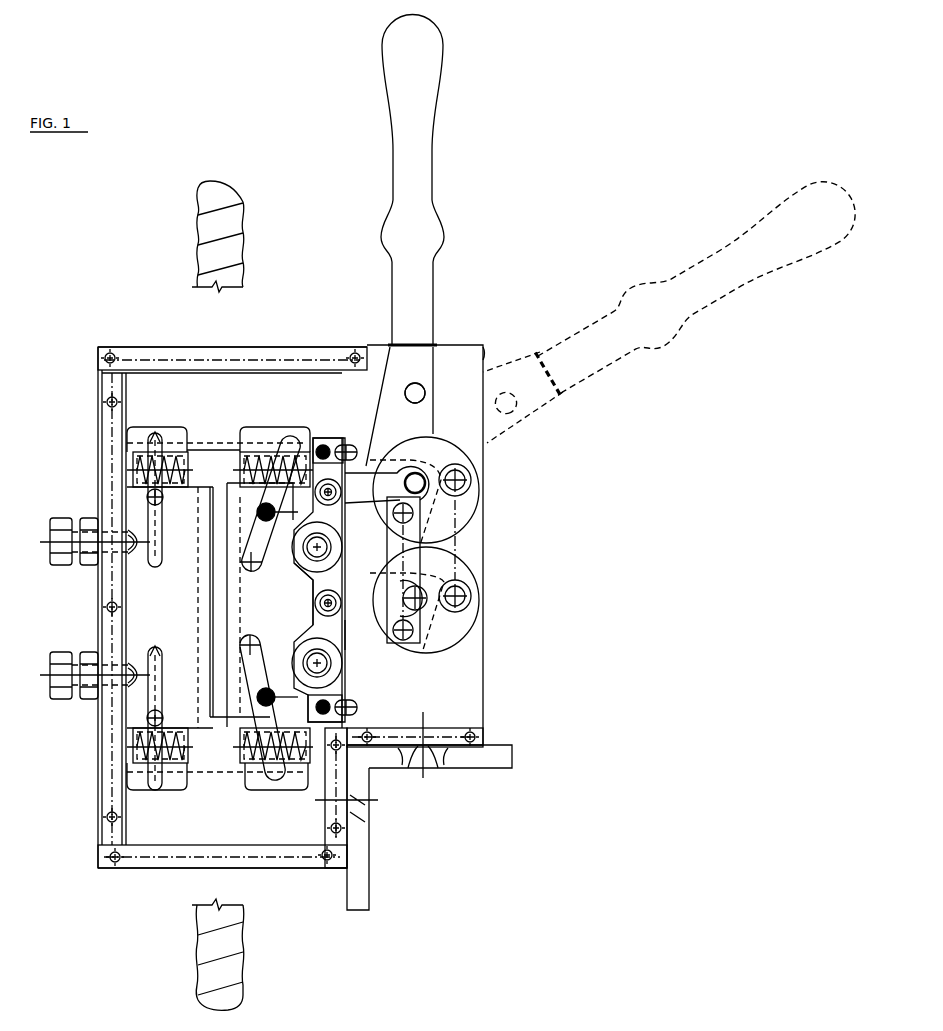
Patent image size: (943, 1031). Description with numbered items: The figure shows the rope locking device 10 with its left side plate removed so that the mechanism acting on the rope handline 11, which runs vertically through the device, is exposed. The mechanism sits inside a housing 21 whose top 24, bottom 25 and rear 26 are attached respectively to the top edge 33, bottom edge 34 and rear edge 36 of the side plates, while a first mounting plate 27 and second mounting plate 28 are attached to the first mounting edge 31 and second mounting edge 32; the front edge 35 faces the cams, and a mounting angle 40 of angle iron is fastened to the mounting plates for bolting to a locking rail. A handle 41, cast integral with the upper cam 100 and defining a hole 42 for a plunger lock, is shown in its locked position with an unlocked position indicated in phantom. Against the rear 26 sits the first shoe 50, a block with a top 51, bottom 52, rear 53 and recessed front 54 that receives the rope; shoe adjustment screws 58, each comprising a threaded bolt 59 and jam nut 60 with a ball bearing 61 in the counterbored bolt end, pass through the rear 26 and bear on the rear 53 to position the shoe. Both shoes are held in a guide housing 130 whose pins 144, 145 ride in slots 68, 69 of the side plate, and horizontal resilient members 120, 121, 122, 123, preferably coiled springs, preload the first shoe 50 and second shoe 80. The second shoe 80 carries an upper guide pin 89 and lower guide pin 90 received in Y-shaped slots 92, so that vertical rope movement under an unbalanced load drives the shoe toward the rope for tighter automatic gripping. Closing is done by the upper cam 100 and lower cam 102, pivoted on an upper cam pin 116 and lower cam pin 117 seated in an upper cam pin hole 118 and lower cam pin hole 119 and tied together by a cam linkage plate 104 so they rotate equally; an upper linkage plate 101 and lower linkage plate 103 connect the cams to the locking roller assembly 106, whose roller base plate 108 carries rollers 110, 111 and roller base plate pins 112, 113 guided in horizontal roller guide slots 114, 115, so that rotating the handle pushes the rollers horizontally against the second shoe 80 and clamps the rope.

The rope locking device 10 is at (673, 306).
The rope handline 11 is at (198, 937).
The housing 21 is at (483, 347).
The top 24 is at (283, 355).
The bottom 25 is at (267, 867).
The rear 26 is at (107, 780).
The first mounting plate 27 is at (342, 770).
The second mounting plate 28 is at (452, 728).
The first mounting edge 31 is at (348, 835).
The second mounting edge 32 is at (470, 748).
The top edge 33 is at (173, 347).
The bottom edge 34 is at (143, 868).
The front edge 35 is at (487, 552).
The rear edge 36 is at (98, 760).
The mounting angle 40 is at (452, 768).
The handle 41 is at (435, 165).
The hole 42 is at (425, 393).
The first shoe 50 is at (197, 612).
The top 51 is at (200, 485).
The bottom 52 is at (195, 743).
The rear 53 is at (130, 580).
The front 54 is at (198, 640).
The shoe adjustment screw 58 is at (50, 520).
The threaded bolt 59 is at (72, 566).
The jam nut 60 is at (92, 517).
The ball bearing 61 is at (137, 558).
The slot 68 is at (160, 688).
The slot 69 is at (160, 540).
The second shoe 80 is at (311, 580).
The upper guide pin 89 is at (266, 518).
The lower guide pin 90 is at (268, 690).
The Y-shaped slot 92 is at (245, 643).
The upper cam 100 is at (468, 515).
The upper linkage plate 101 is at (343, 492).
The lower cam 102 is at (468, 627).
The lower linkage plate 103 is at (343, 603).
The cam linkage plate 104 is at (420, 543).
The locking roller assembly 106 is at (335, 580).
The roller base plate 108 is at (343, 632).
The roller 110 is at (343, 548).
The roller 111 is at (345, 668).
The roller base plate pin 112 is at (322, 444).
The roller base plate pin 113 is at (343, 702).
The horizontal roller guide slot 114 is at (343, 440).
The horizontal roller guide slot 115 is at (360, 706).
The upper cam pin 116 is at (465, 478).
The lower cam pin 117 is at (472, 595).
The upper cam pin hole 118 is at (477, 480).
The lower cam pin hole 119 is at (478, 603).
The horizontal resilient member 120 is at (205, 443).
The horizontal resilient member 121 is at (170, 758).
The horizontal resilient member 122 is at (280, 440).
The horizontal resilient member 123 is at (273, 760).
The guide housing 130 is at (212, 440).
The pin 144 is at (160, 503).
The pin 145 is at (160, 716).